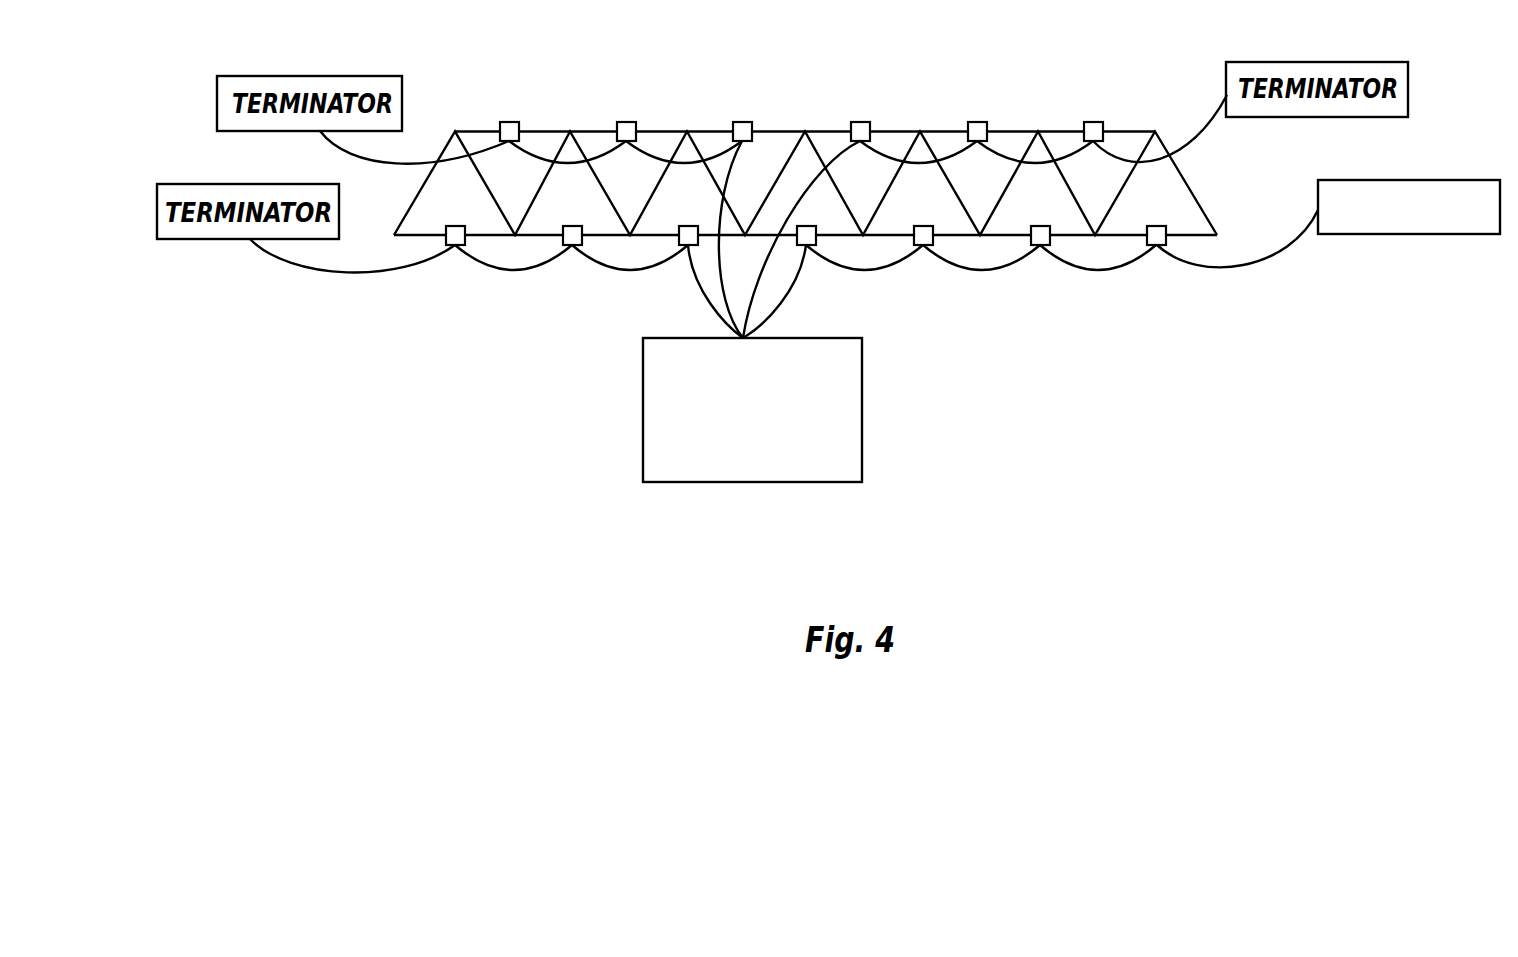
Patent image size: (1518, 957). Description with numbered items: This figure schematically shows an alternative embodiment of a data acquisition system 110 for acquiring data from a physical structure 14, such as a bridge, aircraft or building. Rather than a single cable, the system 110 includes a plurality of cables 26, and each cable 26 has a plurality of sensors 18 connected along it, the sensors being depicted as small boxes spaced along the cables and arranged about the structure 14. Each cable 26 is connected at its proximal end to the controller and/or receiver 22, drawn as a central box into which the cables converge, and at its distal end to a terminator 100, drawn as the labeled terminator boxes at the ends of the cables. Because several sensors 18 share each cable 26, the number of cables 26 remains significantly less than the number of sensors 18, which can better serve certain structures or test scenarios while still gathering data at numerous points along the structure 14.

The data acquisition system 110 is at (393, 342).
The physical structure 14 is at (1013, 130).
The sensor 18 is at (1157, 245).
The cable 26 is at (990, 270).
The terminator 100 is at (1445, 178).
The controller and/or receiver 22 is at (713, 482).